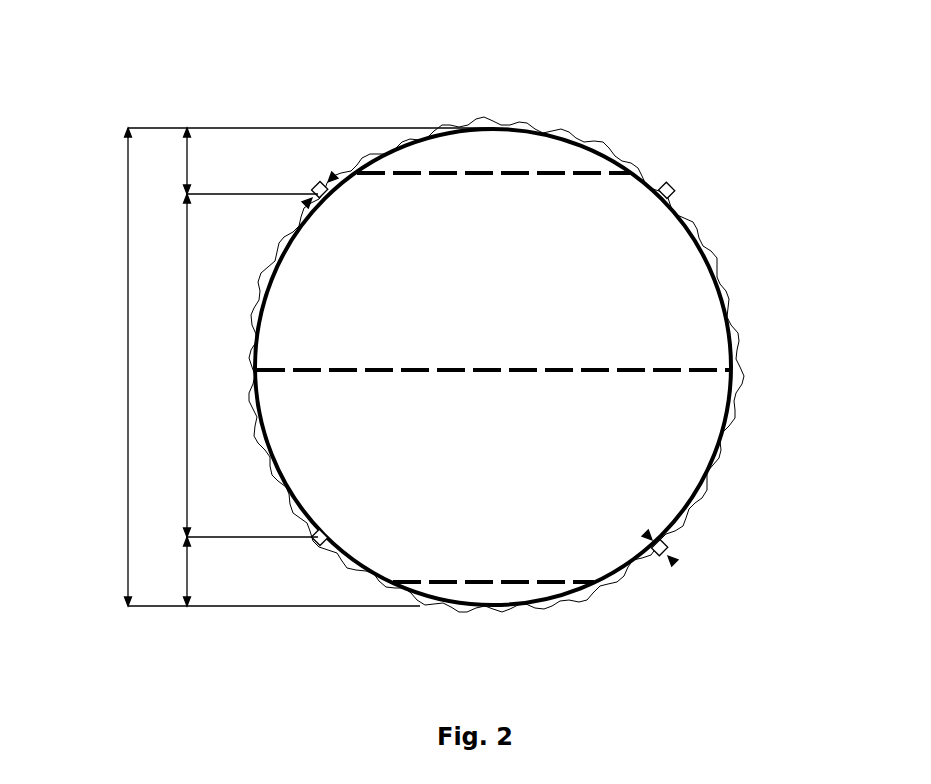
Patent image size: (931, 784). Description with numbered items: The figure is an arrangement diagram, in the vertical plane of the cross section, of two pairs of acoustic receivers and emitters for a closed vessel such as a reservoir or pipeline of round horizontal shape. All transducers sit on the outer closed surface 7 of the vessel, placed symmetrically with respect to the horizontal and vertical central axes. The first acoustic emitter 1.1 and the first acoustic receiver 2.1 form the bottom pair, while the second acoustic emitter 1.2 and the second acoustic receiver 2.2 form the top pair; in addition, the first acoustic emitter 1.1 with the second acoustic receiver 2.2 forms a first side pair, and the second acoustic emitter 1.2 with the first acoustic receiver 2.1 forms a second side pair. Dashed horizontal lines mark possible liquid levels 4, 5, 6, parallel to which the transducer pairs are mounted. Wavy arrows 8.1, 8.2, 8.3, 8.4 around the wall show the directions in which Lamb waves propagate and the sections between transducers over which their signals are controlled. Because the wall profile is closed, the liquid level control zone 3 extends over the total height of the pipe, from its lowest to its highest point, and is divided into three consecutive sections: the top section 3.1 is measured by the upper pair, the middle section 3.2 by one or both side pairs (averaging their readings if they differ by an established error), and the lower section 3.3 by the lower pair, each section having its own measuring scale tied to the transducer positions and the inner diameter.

The outer closed surface 7 is at (493, 312).
The liquid level 4 is at (503, 140).
The liquid level 5 is at (494, 256).
The liquid level 6 is at (584, 391).
The first acoustic emitter 1.1 is at (307, 550).
The second acoustic emitter 1.2 is at (686, 186).
The first acoustic receiver 2.1 is at (670, 552).
The second acoustic receiver 2.2 is at (316, 186).
The liquid level control zone 3 is at (91, 367).
The top section 3.1 is at (122, 122).
The middle section 3.2 is at (122, 334).
The lower section 3.3 is at (120, 526).
The wavy arrow 8.1 is at (584, 93).
The wavy arrow 8.2 is at (463, 659).
The wavy arrow 8.3 is at (194, 561).
The wavy arrow 8.4 is at (779, 355).